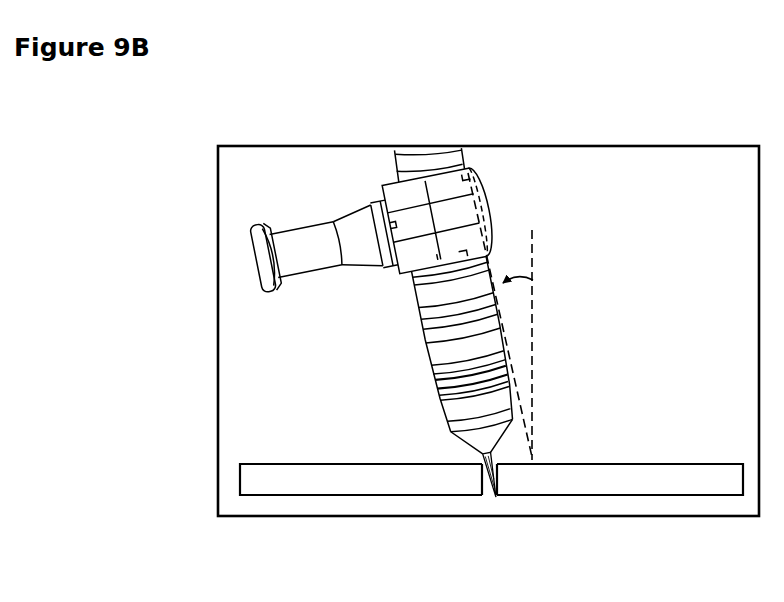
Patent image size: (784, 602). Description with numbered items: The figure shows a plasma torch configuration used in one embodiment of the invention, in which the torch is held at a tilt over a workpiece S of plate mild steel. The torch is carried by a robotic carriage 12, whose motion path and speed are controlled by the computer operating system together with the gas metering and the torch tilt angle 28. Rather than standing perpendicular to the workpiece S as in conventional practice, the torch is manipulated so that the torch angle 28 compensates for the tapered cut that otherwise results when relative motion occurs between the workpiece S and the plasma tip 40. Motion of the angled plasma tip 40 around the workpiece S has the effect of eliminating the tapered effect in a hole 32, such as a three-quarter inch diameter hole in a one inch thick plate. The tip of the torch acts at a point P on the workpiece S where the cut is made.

The robotic carriage 12 is at (320, 272).
The torch tilt angle 28 is at (510, 279).
The 0.75 inch diameter hole 32 is at (482, 461).
The plasma tip 40 is at (500, 455).
The workpiece S is at (667, 485).
The point P is at (481, 479).